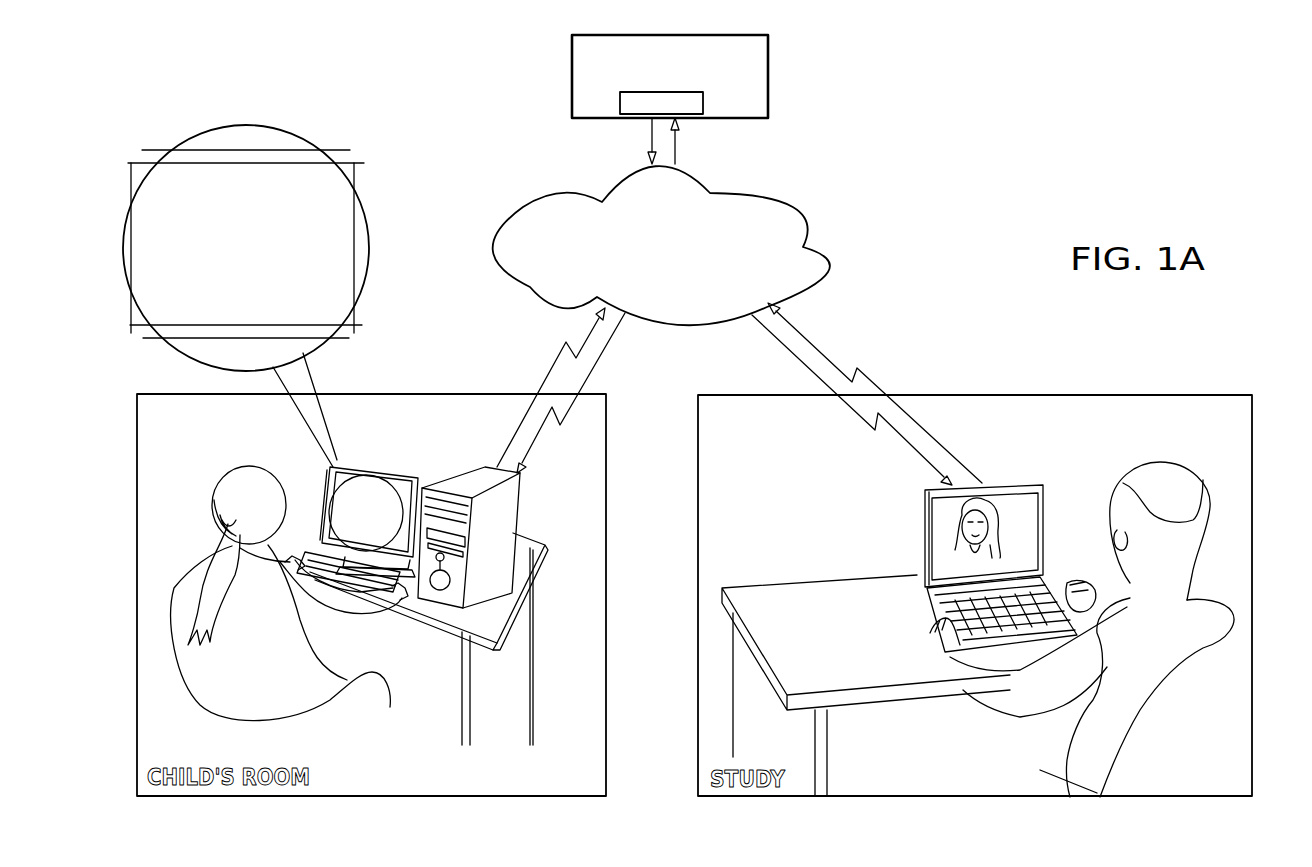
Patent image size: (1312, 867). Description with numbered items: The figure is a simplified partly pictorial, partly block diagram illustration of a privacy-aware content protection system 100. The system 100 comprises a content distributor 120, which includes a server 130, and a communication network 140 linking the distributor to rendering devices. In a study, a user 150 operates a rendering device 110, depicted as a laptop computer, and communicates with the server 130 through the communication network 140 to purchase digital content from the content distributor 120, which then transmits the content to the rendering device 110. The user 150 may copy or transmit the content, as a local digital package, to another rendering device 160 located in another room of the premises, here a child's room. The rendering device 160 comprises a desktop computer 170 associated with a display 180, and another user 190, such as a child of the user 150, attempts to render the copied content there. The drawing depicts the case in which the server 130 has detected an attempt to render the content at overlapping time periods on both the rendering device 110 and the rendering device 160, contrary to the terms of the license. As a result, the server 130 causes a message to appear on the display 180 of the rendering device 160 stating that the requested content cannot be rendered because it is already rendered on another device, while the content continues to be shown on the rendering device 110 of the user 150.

The privacy-aware content protection system 100 is at (835, 102).
The rendering device 110 is at (1043, 500).
The content distributor 120 is at (572, 87).
The server 130 is at (703, 103).
The communication network 140 is at (523, 206).
The user 150 is at (1195, 528).
The rendering device 160 is at (457, 470).
The desktop computer 170 is at (513, 508).
The display 180 is at (298, 158).
The another user 190 is at (227, 487).